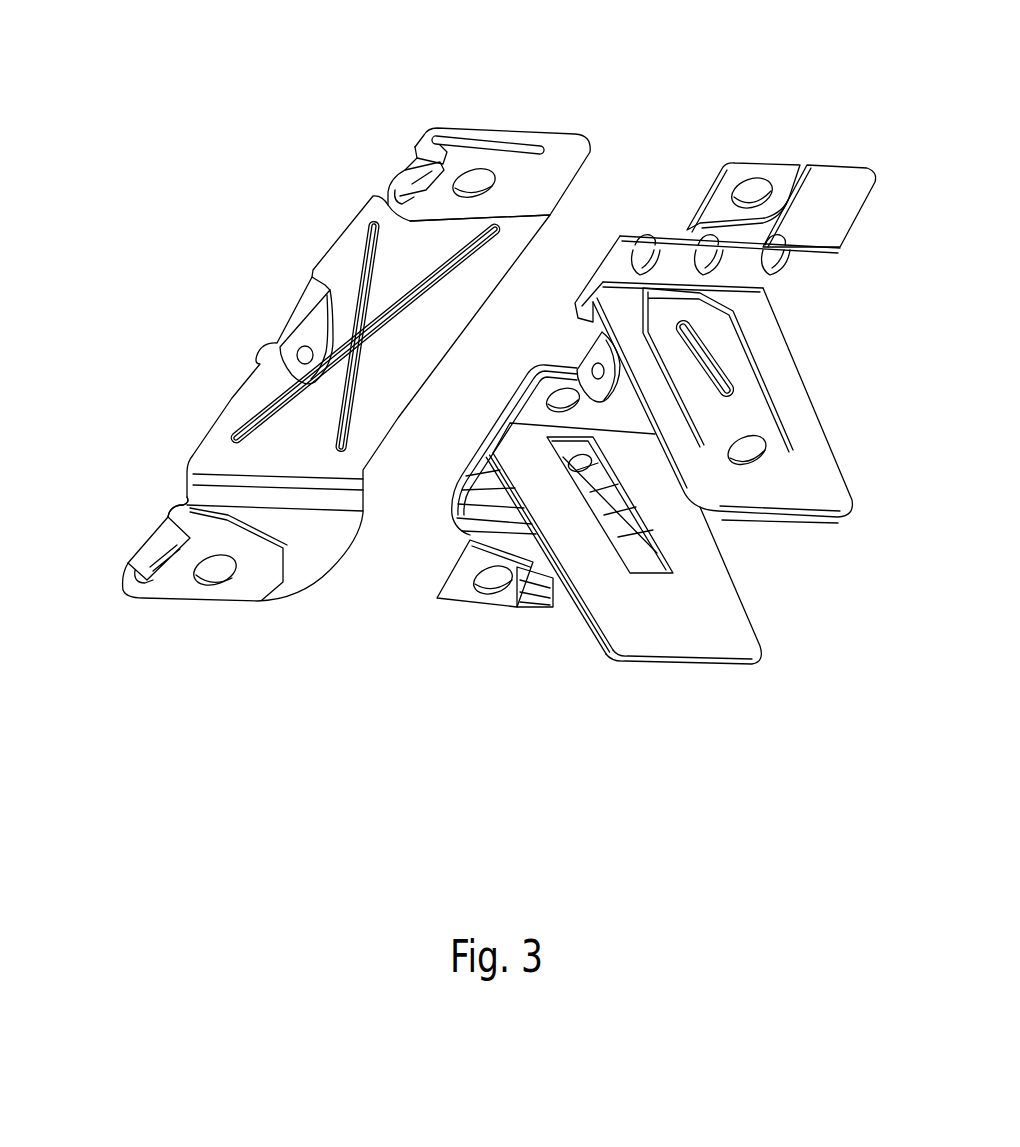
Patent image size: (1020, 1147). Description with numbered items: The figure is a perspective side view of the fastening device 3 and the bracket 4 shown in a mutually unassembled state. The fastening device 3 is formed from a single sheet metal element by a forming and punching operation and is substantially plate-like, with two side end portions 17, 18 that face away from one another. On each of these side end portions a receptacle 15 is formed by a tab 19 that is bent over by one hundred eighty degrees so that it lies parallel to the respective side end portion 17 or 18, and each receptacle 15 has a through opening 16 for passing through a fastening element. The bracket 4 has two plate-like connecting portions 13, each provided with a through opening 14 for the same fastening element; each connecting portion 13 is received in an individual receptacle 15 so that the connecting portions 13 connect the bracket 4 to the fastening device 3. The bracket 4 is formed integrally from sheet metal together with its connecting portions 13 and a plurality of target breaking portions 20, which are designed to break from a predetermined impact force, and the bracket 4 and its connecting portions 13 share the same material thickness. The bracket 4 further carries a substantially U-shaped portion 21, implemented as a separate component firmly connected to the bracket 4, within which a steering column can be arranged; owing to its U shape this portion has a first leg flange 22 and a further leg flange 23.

The fastening device 3 is at (268, 138).
The bracket 4 is at (507, 703).
The connecting portion 13 is at (745, 195).
The through opening 14 is at (752, 192).
The receptacle 15 is at (472, 118).
The through opening 16 is at (478, 177).
The side end portion 17 is at (392, 148).
The side end portion 18 is at (135, 527).
The tab 19 is at (527, 180).
The target breaking portion 20 is at (688, 219).
The U-shaped portion 21 is at (803, 587).
The first leg flange 22 is at (627, 630).
The further leg flange 23 is at (837, 500).